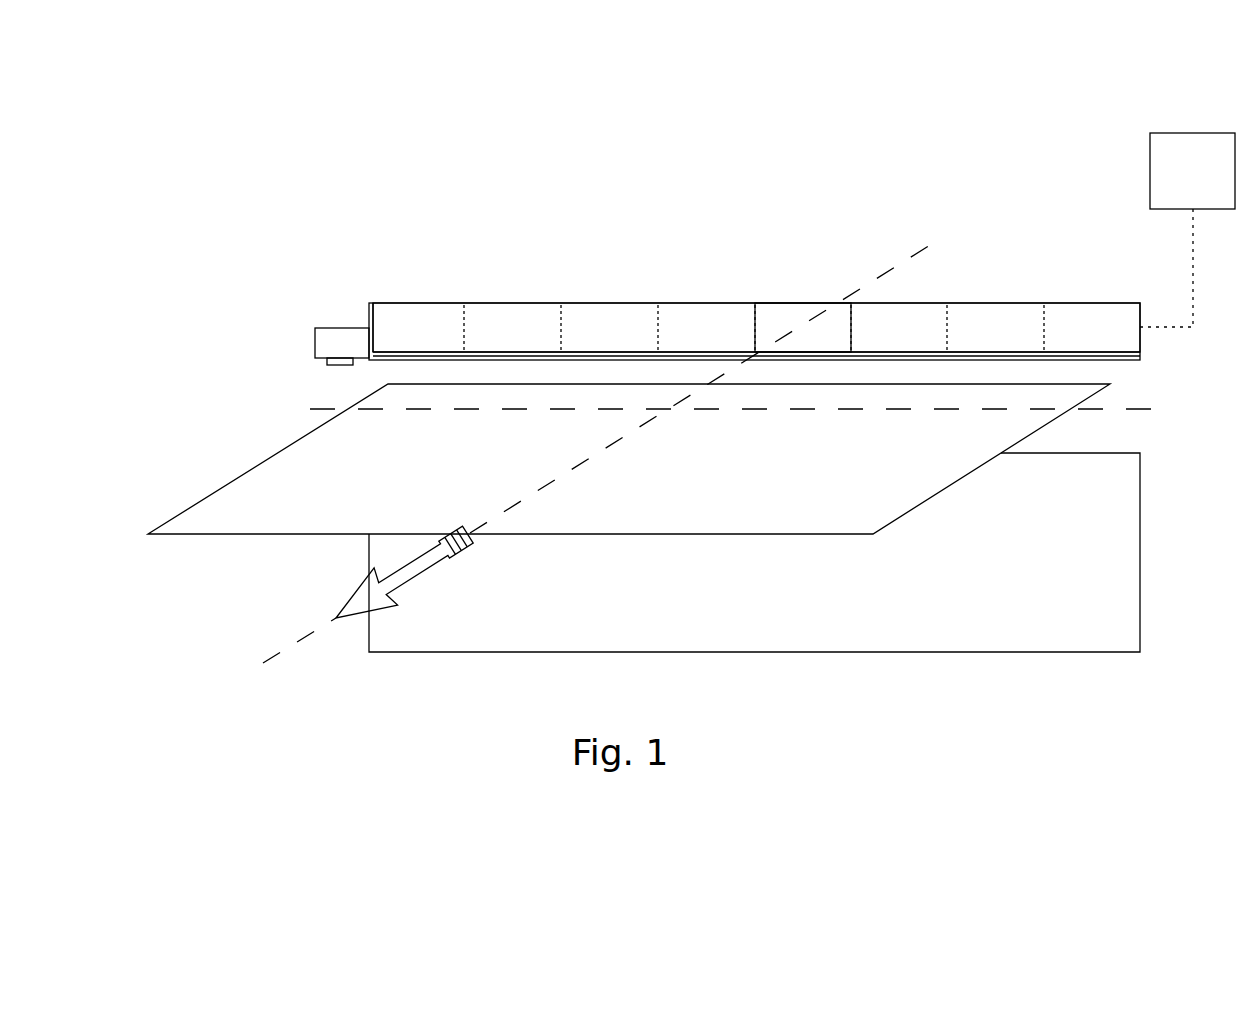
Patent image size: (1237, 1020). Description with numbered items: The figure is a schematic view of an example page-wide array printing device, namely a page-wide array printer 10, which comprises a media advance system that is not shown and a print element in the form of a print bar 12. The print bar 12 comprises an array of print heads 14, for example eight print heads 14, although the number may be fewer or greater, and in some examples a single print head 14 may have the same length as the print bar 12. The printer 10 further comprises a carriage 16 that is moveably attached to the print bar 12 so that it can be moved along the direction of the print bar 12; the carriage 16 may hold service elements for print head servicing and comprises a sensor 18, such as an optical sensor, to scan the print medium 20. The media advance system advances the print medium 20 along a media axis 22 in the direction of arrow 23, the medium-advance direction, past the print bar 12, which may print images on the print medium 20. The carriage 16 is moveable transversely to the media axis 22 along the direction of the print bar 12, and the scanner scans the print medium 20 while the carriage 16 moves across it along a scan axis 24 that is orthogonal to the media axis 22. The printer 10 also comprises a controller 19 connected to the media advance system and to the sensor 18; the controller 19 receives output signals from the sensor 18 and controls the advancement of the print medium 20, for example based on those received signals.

The page-wide array printer 10 is at (676, 236).
The print bar 12 is at (531, 303).
The print head 14 is at (810, 328).
The carriage 16 is at (315, 344).
The sensor 18 is at (338, 367).
The controller 19 is at (1173, 189).
The print medium 20 is at (302, 497).
The media axis 22 is at (938, 242).
The arrow 23 is at (350, 620).
The scan axis 24 is at (1168, 409).